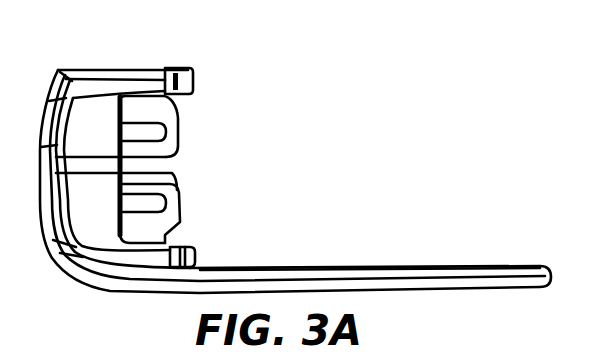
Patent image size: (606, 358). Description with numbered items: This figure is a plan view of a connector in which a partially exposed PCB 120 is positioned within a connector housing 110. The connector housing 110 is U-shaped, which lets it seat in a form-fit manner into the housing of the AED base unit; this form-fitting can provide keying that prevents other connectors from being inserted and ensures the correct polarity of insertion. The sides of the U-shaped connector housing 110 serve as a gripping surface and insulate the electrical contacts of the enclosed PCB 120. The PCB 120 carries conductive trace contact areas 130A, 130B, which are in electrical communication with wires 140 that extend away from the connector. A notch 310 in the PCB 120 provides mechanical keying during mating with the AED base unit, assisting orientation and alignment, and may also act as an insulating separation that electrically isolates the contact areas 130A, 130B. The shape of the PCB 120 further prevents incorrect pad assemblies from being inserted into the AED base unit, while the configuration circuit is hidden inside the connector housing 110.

The connector housing 110 is at (92, 66).
The PCB 120 is at (160, 106).
The contact area 130A is at (157, 136).
The contact area 130B is at (157, 206).
The notch 310 is at (150, 170).
The wires 140 is at (392, 266).